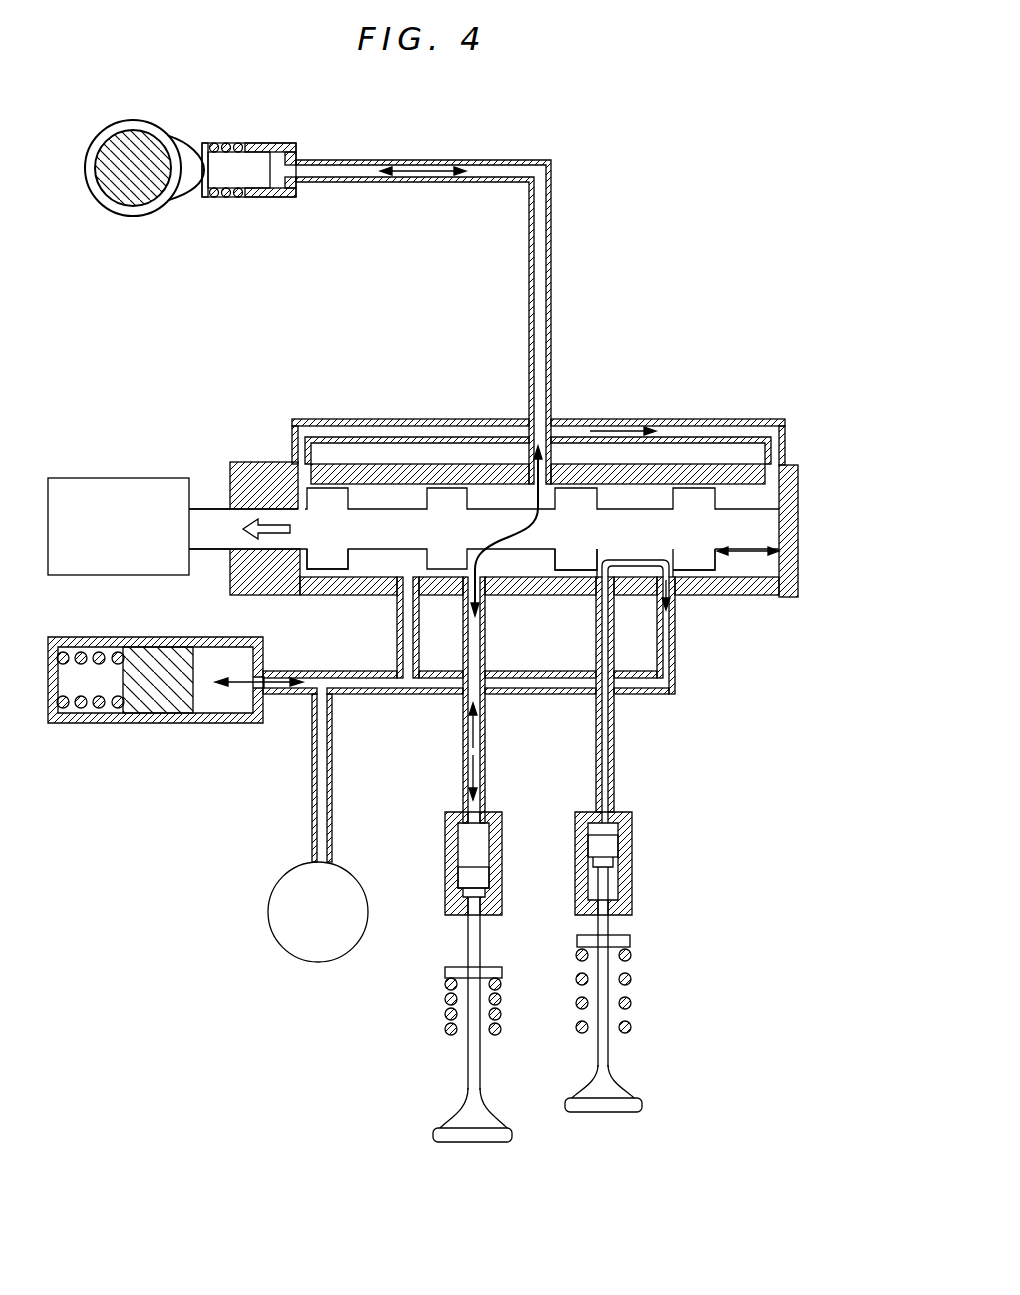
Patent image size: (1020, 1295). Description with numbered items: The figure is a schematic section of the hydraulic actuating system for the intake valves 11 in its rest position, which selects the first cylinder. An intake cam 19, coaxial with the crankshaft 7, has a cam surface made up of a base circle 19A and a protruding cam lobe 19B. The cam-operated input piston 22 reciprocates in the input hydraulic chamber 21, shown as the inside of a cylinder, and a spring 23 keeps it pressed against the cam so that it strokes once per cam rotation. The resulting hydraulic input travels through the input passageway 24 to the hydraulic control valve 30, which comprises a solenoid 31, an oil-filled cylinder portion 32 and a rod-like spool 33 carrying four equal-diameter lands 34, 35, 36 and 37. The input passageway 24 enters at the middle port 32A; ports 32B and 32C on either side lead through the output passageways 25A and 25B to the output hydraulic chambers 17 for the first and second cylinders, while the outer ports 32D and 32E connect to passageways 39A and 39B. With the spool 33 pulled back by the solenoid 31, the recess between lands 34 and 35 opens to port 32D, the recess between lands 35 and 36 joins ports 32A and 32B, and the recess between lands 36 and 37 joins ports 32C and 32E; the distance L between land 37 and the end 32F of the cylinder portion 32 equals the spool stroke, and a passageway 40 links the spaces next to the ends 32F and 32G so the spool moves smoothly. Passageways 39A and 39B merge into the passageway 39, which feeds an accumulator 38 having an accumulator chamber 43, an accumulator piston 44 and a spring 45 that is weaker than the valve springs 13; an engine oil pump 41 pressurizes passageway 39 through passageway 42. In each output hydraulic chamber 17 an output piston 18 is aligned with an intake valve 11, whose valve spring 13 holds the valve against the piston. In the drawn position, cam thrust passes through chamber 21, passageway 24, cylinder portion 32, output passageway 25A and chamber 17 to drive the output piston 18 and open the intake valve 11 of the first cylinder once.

The crankshaft 7 is at (118, 143).
The intake cam 19 is at (146, 170).
The base circle 19A is at (108, 207).
The cam lobe 19B is at (185, 200).
The input hydraulic chamber 21 is at (250, 172).
The input piston 22 is at (270, 172).
The spring 23 is at (230, 143).
The input passageway 24 is at (552, 240).
The hydraulic control valve 30 is at (523, 483).
The solenoid 31 is at (128, 478).
The cylinder portion 32 is at (523, 500).
The port 32A is at (472, 484).
The port 32B is at (500, 585).
The port 32C is at (625, 585).
The port 32D is at (400, 584).
The port 32E is at (690, 585).
The end of cylinder portion 32F is at (775, 514).
The end of cylinder portion 32G is at (302, 496).
The spool 33 is at (392, 500).
The land 34 is at (320, 585).
The land 35 is at (443, 577).
The land 36 is at (576, 578).
The land 37 is at (700, 577).
The accumulator 38 is at (175, 704).
The passageway 39 is at (383, 695).
The passageway 39A is at (395, 632).
The passageway 39B is at (682, 682).
The passageway 40 is at (690, 419).
The engine oil pump 41 is at (268, 912).
The passageway 42 is at (312, 770).
The accumulator chamber 43 is at (220, 712).
The accumulator piston 44 is at (160, 670).
The spring 45 is at (100, 655).
The output passageway 25A is at (487, 752).
The output passageway 25B is at (616, 750).
The output hydraulic chamber 17 is at (489, 838).
The output piston 18 is at (489, 878).
The valve spring 13 is at (501, 998).
The intake valve 11 is at (481, 1062).